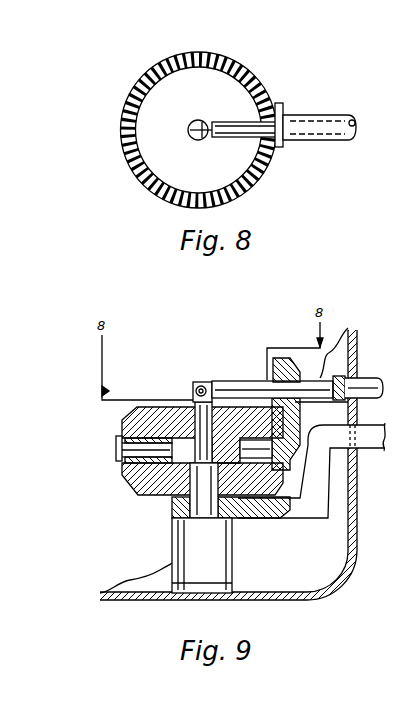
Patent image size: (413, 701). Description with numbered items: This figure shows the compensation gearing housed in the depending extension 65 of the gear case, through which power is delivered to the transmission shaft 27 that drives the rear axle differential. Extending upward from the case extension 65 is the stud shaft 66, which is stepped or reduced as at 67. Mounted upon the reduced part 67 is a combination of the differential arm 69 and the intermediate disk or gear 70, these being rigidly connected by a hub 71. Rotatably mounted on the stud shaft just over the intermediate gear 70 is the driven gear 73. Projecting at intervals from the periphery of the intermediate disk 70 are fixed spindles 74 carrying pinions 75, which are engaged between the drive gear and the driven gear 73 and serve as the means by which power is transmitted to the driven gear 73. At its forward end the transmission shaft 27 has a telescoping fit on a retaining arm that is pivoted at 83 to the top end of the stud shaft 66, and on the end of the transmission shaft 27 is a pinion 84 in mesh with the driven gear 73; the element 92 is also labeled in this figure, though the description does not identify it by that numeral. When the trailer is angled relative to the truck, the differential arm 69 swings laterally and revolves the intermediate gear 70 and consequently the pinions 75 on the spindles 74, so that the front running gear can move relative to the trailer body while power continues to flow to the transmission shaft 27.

In FIG. 8, the driven gear 73 is at (264, 79).
In FIG. 9, the driven gear 73 is at (128, 417).
In FIG. 8, the pivot 83 is at (194, 138).
In FIG. 9, the pivot 83 is at (205, 382).
In FIG. 8, the shaft 92 is at (220, 125).
In FIG. 9, the shaft 92 is at (228, 380).
In FIG. 8, the pinion 84 is at (279, 149).
In FIG. 9, the pinion 84 is at (288, 358).
In FIG. 8, the transmission shaft 27 is at (332, 141).
In FIG. 9, the transmission shaft 27 is at (373, 399).
In FIG. 9, the intermediate disk or gear 70 is at (186, 440).
In FIG. 9, the pinions 75 is at (118, 434).
In FIG. 9, the spindles 74 is at (140, 448).
In FIG. 9, the differential arm 69 is at (140, 488).
In FIG. 9, the hub 71 is at (240, 515).
In FIG. 9, the stepped or reduced part 67 is at (200, 502).
In FIG. 9, the stud shaft 66 is at (193, 540).
In FIG. 9, the depending extension 65 is at (157, 597).